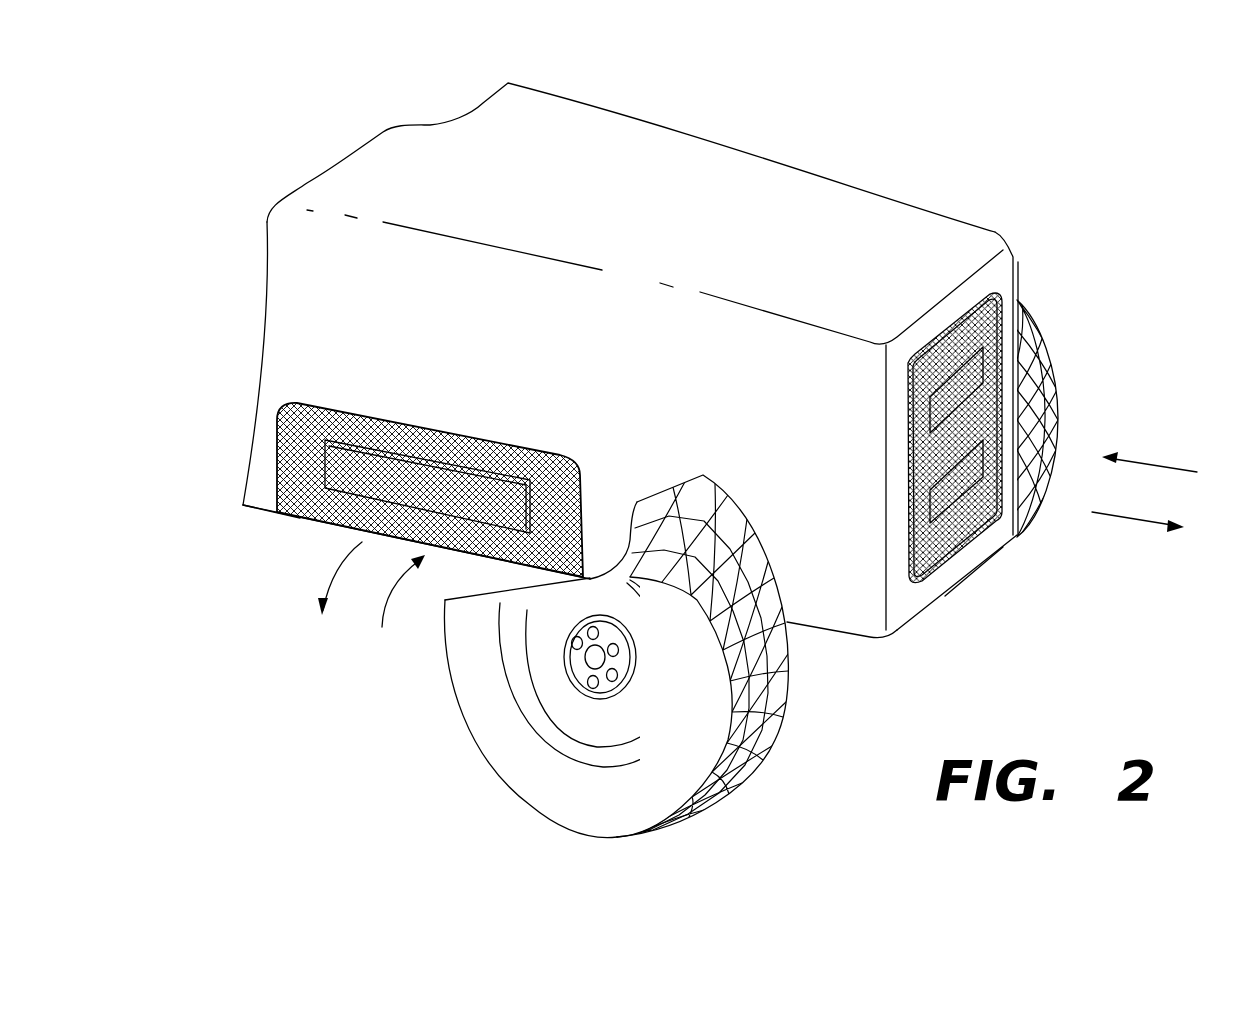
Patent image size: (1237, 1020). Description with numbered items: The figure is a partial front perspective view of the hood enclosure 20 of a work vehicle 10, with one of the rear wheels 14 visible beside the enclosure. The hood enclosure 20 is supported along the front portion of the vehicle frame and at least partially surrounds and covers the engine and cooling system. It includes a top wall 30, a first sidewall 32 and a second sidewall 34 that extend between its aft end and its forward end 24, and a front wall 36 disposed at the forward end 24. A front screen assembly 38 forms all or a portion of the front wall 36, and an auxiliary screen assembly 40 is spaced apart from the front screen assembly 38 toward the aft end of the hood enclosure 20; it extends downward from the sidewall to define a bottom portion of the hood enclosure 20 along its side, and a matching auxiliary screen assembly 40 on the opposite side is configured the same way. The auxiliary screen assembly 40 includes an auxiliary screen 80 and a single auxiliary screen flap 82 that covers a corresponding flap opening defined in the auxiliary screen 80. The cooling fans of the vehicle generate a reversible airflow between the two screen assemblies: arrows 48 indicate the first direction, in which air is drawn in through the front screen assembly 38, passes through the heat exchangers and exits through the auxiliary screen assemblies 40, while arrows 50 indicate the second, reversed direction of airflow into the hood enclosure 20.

The work vehicle 10 is at (1010, 146).
The rear wheels 14 is at (783, 693).
The hood enclosure 20 is at (800, 193).
The forward end 24 is at (912, 600).
The top wall 30 is at (665, 152).
The first sidewall 32 is at (833, 602).
The second sidewall 34 is at (1015, 253).
The front wall 36 is at (957, 582).
The front screen assembly 38 is at (997, 523).
The auxiliary screen assembly 40 is at (302, 508).
The arrows indicating first airflow direction 48 is at (333, 573).
The arrows indicating second airflow direction 50 is at (387, 598).
The auxiliary screen 80 is at (295, 457).
The auxiliary screen flap 82 is at (380, 463).